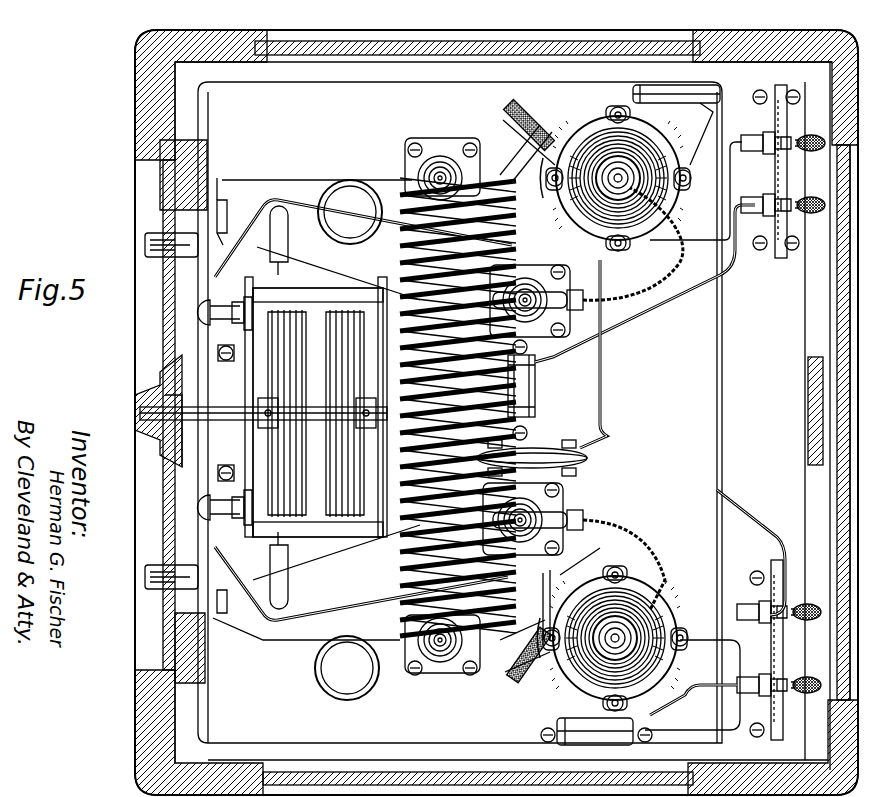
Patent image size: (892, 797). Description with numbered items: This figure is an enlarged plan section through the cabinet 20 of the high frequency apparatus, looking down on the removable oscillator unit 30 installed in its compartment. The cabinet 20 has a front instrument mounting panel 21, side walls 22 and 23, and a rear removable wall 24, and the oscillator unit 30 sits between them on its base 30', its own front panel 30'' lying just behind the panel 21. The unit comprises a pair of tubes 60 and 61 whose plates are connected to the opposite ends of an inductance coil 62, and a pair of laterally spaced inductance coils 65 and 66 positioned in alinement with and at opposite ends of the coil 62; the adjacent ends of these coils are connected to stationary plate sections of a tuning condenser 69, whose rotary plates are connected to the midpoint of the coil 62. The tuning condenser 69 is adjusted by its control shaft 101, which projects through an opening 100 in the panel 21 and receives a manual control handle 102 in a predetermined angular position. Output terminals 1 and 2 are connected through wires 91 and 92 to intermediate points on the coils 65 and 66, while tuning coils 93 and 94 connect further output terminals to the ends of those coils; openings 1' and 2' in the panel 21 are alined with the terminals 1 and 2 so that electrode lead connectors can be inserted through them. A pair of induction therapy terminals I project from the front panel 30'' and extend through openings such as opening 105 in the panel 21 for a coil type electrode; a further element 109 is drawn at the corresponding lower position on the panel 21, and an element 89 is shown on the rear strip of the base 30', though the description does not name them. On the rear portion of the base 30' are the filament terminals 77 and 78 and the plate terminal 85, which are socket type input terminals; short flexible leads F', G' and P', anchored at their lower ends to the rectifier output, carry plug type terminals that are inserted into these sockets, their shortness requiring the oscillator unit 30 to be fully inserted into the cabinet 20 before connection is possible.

The cabinet 20 is at (136, 96).
The side wall 22 is at (492, 42).
The side wall 23 is at (484, 772).
The rear removable wall 24 is at (840, 402).
The oscillator unit 30 is at (481, 412).
The base 30' is at (756, 400).
The front panel 30'' is at (149, 410).
The front instrument mounting panel 21 is at (135, 298).
The output terminal 1 is at (170, 339).
The opening 1' is at (169, 326).
The output terminal 2 is at (174, 492).
The opening 2' is at (169, 514).
The induction therapy terminal I is at (150, 240).
The opening 105 is at (150, 232).
The plug connector 109 is at (150, 586).
The opening 100 is at (160, 395).
The control shaft 101 is at (230, 420).
The manual control handle 102 is at (146, 442).
The tuning condenser 69 is at (321, 300).
The wire 91 is at (278, 197).
The wire 92 is at (300, 605).
The tuning coil 93 is at (337, 186).
The tuning coil 94 is at (316, 670).
The inductance coil 65 is at (410, 190).
The inductance coil 66 is at (500, 665).
The inductance coil 62 is at (490, 338).
The tube 61 is at (670, 168).
The tube 60 is at (638, 646).
The plate terminal 85 is at (776, 178).
The filament terminal 78 is at (795, 152).
The filament terminal 77 is at (792, 692).
The terminal strip 89 is at (800, 626).
The flexible lead F' is at (846, 389).
The flexible lead P' is at (783, 220).
The flexible lead G' is at (842, 588).